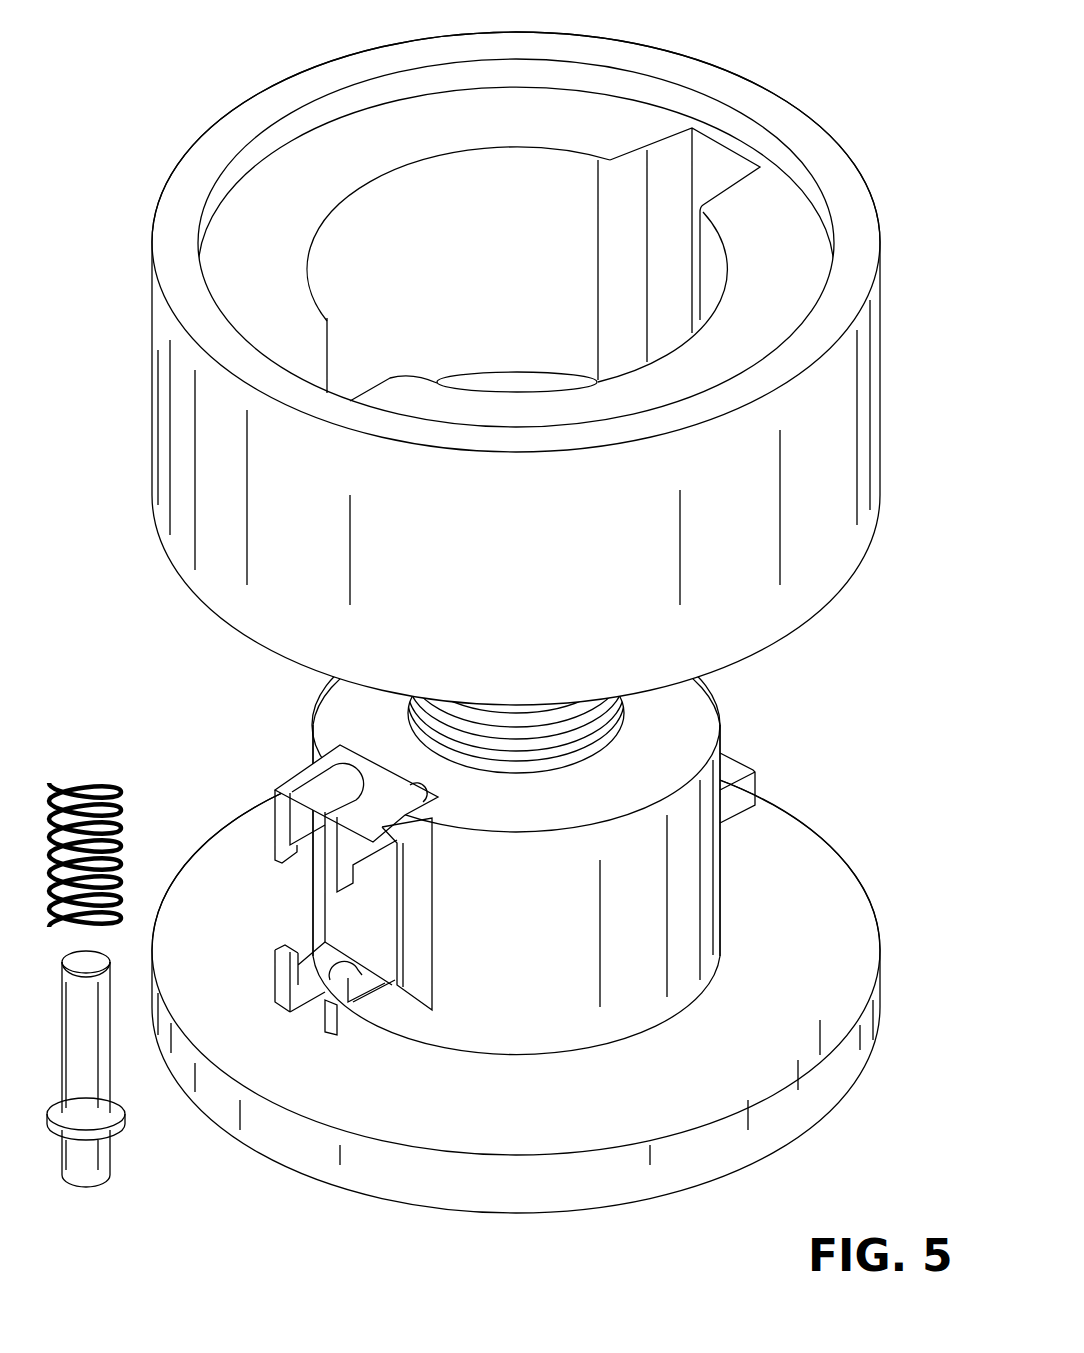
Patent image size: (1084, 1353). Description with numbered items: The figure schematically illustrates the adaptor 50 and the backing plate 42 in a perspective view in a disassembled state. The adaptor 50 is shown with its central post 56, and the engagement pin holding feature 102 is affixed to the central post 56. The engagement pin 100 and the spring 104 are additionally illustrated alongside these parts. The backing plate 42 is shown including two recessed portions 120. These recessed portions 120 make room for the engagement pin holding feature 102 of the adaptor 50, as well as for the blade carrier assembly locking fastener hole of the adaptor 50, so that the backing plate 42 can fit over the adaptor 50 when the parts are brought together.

The backing plate 42 is at (552, 368).
The adaptor 50 is at (880, 955).
The central post 56 is at (695, 875).
The engagement pin 100 is at (83, 1175).
The engagement pin holding feature 102 is at (300, 775).
The spring 104 is at (80, 778).
The recessed portions 120 is at (716, 168).